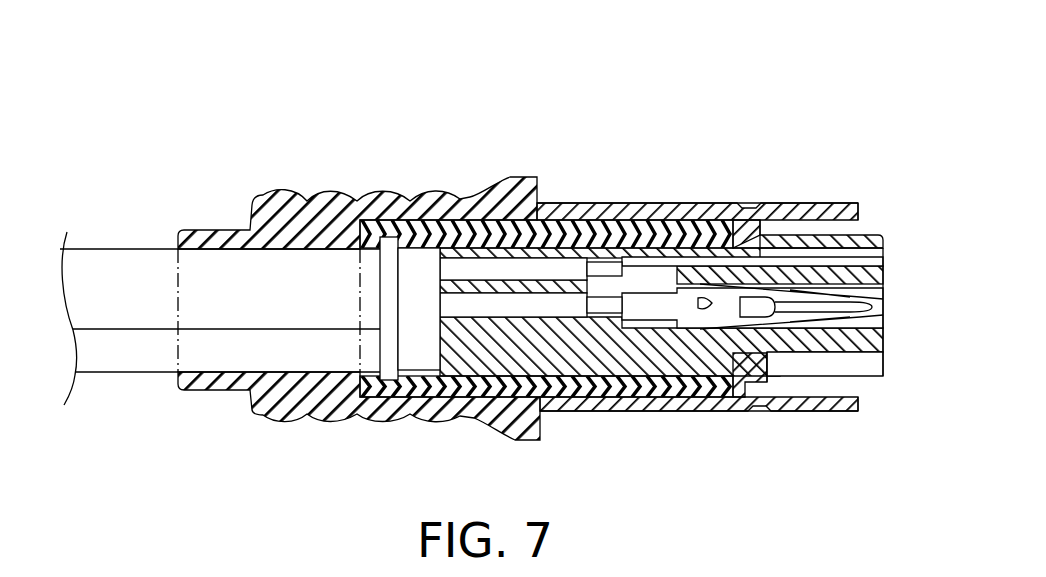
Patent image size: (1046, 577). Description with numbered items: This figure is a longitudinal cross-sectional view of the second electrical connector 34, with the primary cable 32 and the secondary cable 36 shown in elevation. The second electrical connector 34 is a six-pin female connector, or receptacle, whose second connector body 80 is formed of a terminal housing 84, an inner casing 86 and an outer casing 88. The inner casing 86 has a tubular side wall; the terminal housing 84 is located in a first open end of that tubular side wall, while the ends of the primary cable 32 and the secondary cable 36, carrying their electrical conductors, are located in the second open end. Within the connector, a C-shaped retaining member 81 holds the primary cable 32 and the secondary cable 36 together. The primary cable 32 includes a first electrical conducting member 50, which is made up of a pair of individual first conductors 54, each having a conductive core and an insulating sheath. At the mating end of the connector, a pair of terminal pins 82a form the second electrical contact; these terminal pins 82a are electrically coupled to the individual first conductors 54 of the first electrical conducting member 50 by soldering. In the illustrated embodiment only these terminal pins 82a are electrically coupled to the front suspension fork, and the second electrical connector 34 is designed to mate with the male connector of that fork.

The primary cable 32 is at (108, 246).
The second electrical connector 34 is at (692, 108).
The secondary cable 36 is at (135, 376).
The first electrical conducting member 50 is at (477, 256).
The first conductor 54 is at (578, 303).
The second connector body 80 is at (391, 188).
The C-shaped retaining member 81 is at (393, 375).
The terminal pin 82a is at (860, 298).
The terminal housing 84 is at (883, 380).
The inner casing 86 is at (657, 411).
The outer casing 88 is at (308, 195).